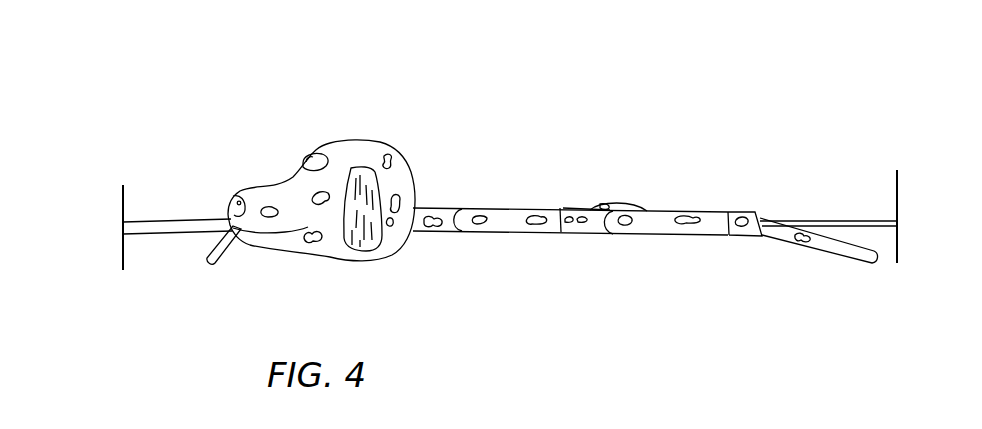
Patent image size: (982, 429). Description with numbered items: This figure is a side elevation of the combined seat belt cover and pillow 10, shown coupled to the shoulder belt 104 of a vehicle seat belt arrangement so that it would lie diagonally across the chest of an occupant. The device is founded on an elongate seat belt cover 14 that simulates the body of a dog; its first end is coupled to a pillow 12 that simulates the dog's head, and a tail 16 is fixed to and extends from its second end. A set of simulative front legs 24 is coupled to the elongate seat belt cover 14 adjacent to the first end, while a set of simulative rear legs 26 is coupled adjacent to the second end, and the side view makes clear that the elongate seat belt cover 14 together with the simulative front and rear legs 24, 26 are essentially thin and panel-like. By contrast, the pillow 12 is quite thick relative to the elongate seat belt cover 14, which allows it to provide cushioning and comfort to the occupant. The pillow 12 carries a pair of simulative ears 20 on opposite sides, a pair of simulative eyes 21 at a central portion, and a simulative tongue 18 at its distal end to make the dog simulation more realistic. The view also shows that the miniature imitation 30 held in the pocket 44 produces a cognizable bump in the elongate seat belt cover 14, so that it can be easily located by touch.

The combined seat belt cover and pillow 10 is at (483, 160).
The pillow 12 is at (347, 142).
The elongate seat belt cover 14 is at (578, 233).
The tail 16 is at (830, 250).
The simulative tongue 18 is at (213, 257).
The simulative ears 20 is at (377, 248).
The simulative eyes 21 is at (303, 163).
The simulative front legs 24 is at (503, 233).
The simulative rear legs 26 is at (685, 208).
The miniature imitation 30 is at (597, 205).
The pocket 44 is at (607, 203).
The shoulder belt 104 is at (165, 237).